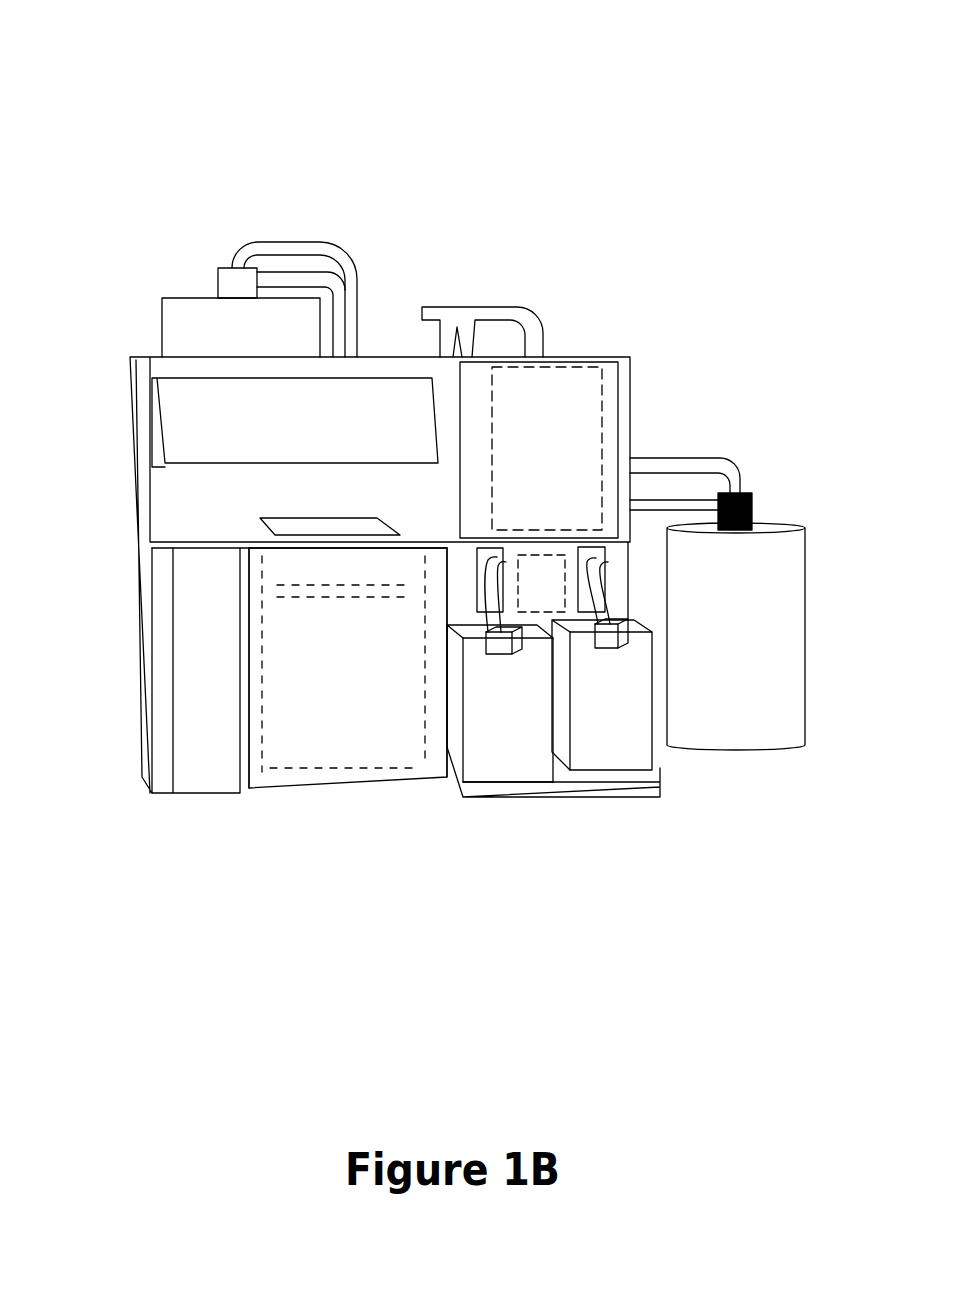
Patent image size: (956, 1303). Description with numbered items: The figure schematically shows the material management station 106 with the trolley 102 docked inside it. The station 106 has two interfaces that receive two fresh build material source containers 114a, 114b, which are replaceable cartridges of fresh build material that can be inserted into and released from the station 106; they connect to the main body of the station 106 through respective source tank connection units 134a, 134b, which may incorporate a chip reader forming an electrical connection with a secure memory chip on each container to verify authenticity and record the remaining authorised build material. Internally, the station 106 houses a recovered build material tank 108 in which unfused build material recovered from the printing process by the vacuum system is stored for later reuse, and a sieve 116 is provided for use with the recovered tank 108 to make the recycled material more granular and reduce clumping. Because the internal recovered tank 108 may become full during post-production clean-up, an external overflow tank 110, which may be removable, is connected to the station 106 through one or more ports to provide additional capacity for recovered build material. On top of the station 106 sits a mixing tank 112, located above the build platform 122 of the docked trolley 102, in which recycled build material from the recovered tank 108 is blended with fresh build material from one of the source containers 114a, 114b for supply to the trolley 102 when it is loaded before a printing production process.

The material management station 106 is at (382, 143).
The trolley 102 is at (355, 745).
The recovered build material tank 108 is at (592, 370).
The external overflow tank 110 is at (773, 570).
The mixing tank 112 is at (188, 310).
The fresh build material source container 114a is at (502, 760).
The fresh build material source container 114b is at (617, 752).
The sieve 116 is at (545, 573).
The build platform 122 is at (345, 522).
The source tank connection unit 134a is at (512, 655).
The source tank connection unit 134b is at (620, 652).